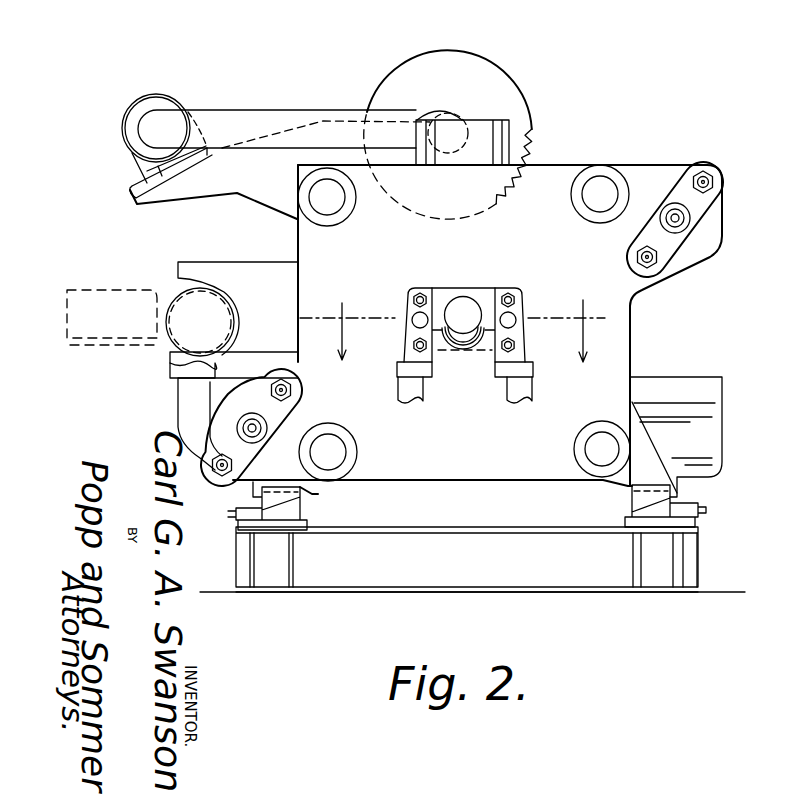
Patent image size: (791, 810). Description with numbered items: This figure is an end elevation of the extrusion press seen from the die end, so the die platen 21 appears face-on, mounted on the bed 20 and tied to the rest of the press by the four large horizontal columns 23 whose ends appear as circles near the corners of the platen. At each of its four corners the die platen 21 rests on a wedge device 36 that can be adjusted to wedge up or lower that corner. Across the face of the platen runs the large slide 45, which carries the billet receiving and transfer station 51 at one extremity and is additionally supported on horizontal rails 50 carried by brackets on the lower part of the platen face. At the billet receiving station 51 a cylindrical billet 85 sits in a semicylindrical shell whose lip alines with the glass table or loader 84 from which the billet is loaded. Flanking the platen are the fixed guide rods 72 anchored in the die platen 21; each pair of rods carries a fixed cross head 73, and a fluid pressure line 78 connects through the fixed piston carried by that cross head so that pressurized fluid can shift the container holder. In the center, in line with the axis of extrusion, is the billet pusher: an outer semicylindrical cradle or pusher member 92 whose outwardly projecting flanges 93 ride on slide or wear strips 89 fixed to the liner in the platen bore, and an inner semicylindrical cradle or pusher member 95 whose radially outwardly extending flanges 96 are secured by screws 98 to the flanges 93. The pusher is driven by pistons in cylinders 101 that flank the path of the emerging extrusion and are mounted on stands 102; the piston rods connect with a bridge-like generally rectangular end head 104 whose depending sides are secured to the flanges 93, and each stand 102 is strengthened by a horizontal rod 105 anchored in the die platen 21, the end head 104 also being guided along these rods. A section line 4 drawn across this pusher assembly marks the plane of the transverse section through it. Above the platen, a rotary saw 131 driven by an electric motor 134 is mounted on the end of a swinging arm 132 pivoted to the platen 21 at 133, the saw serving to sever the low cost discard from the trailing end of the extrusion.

The bed 20 is at (592, 590).
The die platen 21 is at (630, 340).
The horizontal columns 23 is at (327, 212).
The wedge devices 36 is at (316, 512).
The slide 45 is at (210, 263).
The horizontal rails 50 is at (178, 371).
The billet receiving and transfer station 51 is at (168, 272).
The rods 72 is at (292, 376).
The fixed cross head 73 is at (290, 388).
The fluid pressure line 78 is at (268, 428).
The glass table or loader 84 is at (78, 343).
The billet 85 is at (172, 303).
The slide or wear strips 89 is at (702, 437).
The outer semicylindrical cradle or pusher member 92 is at (478, 352).
The outwardly projecting flanges 93 is at (790, 426).
The inner semicylindrical cradle or pusher member 95 is at (455, 348).
The radially outwardly extending flanges 96 is at (790, 386).
The screws 98 is at (774, 346).
The cylinders 101 is at (412, 315).
The stands 102 is at (419, 290).
The end head 104 is at (474, 295).
The horizontal rod 105 is at (418, 296).
The rotary saw 131 is at (530, 135).
The swinging arm 132 is at (240, 193).
The pivot 133 is at (350, 204).
The electric motor 134 is at (180, 99).
The section line 4- 4 is at (452, 330).